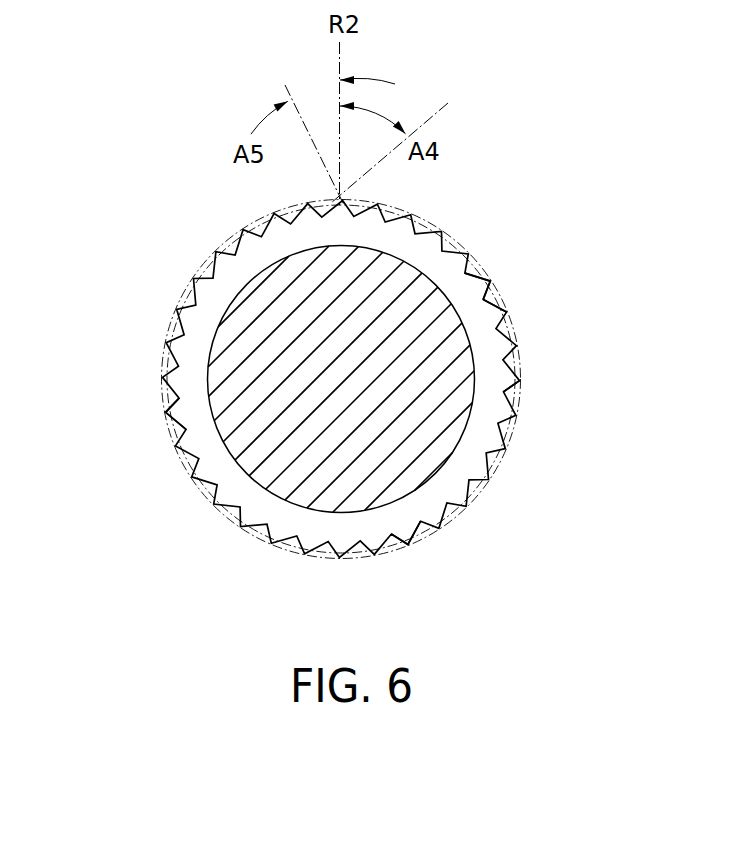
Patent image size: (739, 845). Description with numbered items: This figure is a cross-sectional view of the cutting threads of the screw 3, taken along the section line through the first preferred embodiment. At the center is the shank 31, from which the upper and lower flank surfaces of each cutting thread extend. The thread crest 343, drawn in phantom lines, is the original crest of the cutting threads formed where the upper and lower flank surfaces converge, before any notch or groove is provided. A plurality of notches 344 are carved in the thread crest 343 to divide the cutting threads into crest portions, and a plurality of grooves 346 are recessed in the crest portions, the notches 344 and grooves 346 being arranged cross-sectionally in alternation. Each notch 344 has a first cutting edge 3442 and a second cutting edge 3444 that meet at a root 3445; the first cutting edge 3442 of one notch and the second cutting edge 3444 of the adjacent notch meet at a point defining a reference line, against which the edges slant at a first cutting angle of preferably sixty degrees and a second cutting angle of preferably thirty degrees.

The screw 3 is at (112, 288).
The shank 31 is at (468, 430).
The thread crest 343 is at (405, 547).
The notch 344 is at (212, 506).
The groove 346 is at (167, 424).
The first cutting edge 3442 is at (489, 285).
The second cutting edge 3444 is at (500, 308).
The root 3445 is at (505, 389).